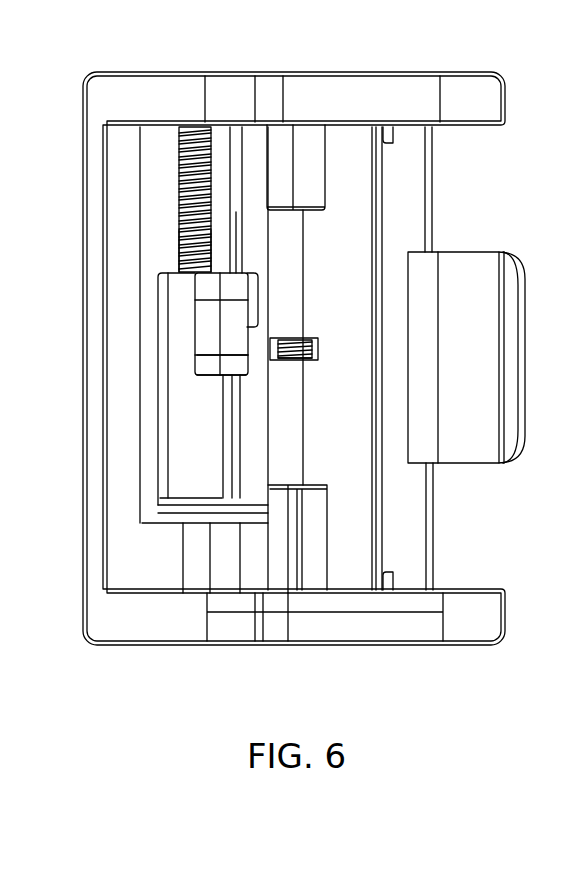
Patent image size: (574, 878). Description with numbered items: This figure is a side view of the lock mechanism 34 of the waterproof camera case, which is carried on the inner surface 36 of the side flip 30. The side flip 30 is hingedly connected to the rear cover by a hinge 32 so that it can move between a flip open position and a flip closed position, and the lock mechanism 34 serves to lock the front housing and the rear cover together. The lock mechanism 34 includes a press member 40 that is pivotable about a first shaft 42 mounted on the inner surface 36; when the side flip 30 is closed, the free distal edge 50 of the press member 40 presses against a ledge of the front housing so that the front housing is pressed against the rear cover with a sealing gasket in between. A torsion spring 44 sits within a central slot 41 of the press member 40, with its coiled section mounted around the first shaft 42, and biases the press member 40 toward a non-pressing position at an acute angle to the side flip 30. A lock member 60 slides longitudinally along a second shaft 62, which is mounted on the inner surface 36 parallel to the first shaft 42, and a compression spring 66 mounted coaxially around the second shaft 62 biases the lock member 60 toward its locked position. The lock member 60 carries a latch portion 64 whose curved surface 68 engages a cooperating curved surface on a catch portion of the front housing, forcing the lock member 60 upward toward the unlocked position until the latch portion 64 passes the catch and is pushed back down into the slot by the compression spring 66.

The side flip 30 is at (83, 138).
The hinge 32 is at (480, 250).
The lock mechanism 34 is at (447, 195).
The inner surface 36 is at (123, 323).
The press member 40 is at (343, 140).
The central slot 41 is at (318, 350).
The first shaft 42 is at (310, 362).
The torsion spring 44 is at (310, 340).
The free distal edge 50 is at (387, 525).
The lock member 60 is at (185, 485).
The second shaft 62 is at (180, 225).
The latch portion 64 is at (240, 350).
The compression spring 66 is at (180, 240).
The curved surface 68 is at (208, 363).